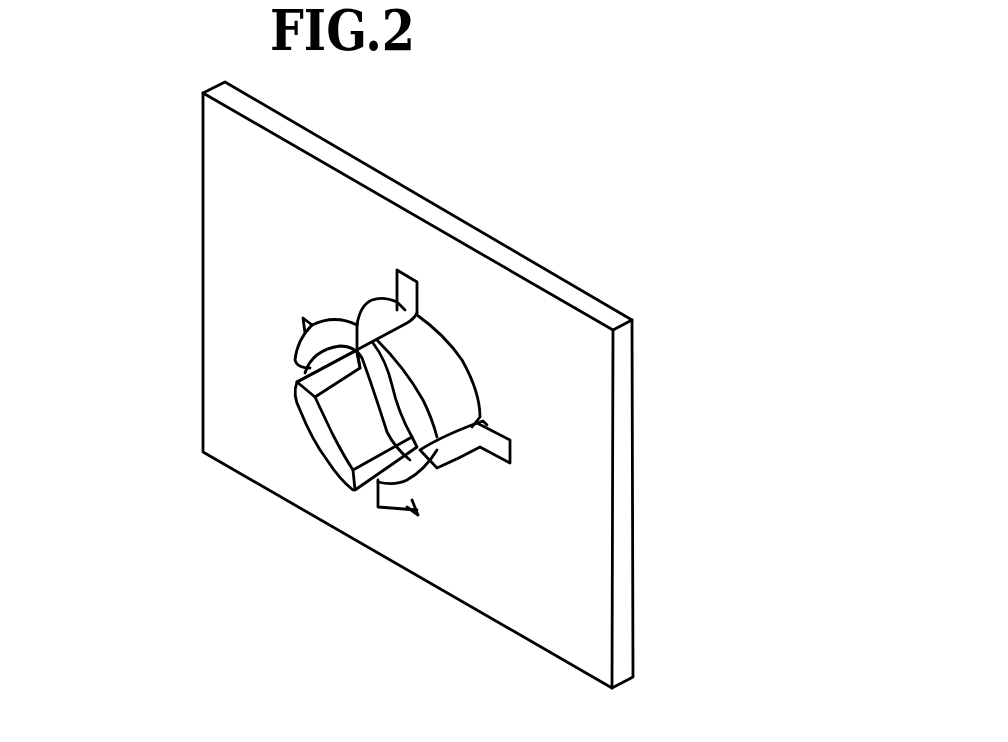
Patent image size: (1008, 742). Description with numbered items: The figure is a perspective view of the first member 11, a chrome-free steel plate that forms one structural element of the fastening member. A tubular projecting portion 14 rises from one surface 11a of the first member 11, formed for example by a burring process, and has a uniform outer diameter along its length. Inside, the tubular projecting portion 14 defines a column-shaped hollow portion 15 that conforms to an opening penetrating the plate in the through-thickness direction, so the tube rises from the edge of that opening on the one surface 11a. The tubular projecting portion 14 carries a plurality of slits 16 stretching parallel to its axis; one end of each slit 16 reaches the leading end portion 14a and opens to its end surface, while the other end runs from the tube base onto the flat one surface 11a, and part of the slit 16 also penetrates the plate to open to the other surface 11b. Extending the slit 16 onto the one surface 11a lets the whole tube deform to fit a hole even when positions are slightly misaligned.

The first member 11 is at (413, 382).
The one surface 11a is at (237, 228).
The other surface 11b is at (367, 165).
The tubular projecting portion 14 is at (437, 365).
The leading end portion 14a is at (393, 498).
The hollow portion 15 is at (352, 422).
The slit 16 is at (447, 452).